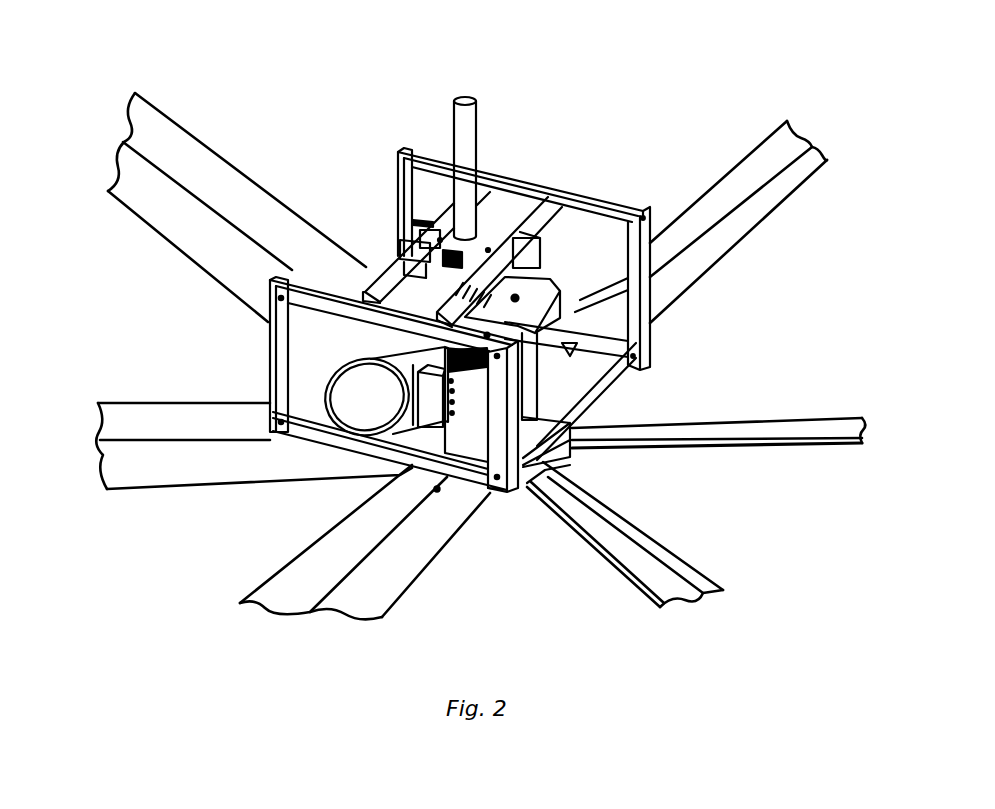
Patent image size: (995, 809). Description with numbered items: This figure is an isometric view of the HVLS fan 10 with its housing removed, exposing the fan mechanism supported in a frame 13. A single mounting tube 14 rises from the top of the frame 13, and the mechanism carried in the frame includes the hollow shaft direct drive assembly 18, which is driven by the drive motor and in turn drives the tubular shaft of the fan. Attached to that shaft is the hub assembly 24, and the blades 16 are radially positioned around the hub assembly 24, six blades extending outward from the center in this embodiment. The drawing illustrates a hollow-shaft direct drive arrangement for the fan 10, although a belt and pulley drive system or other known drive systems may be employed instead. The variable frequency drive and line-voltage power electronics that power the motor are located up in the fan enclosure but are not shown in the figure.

The fan 10 is at (408, 90).
The frame 13 is at (605, 200).
The mounting tube 14 is at (463, 138).
The blades 16 is at (248, 200).
The hollow shaft direct drive assembly 18 is at (360, 400).
The hub assembly 24 is at (573, 430).